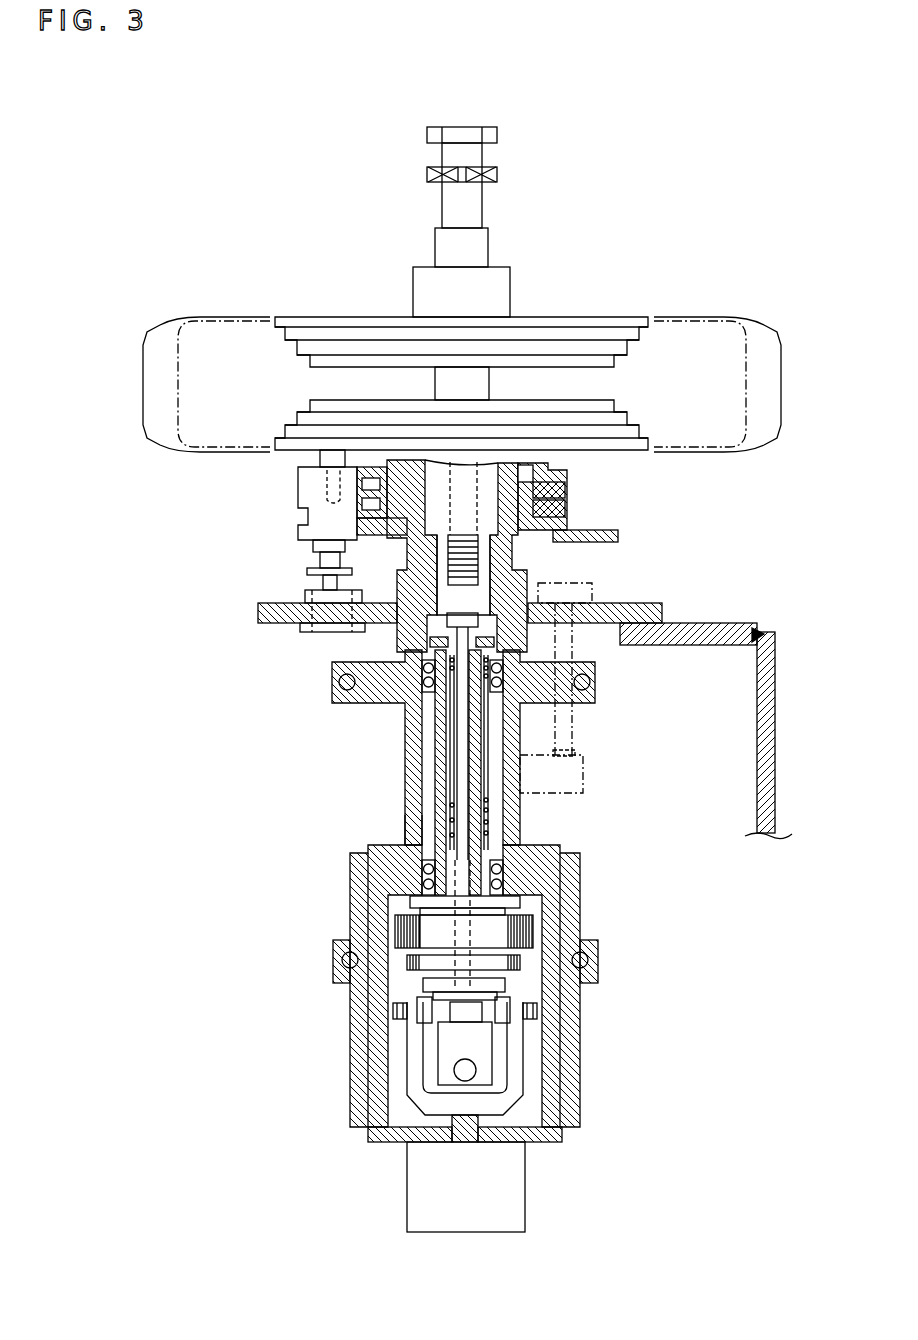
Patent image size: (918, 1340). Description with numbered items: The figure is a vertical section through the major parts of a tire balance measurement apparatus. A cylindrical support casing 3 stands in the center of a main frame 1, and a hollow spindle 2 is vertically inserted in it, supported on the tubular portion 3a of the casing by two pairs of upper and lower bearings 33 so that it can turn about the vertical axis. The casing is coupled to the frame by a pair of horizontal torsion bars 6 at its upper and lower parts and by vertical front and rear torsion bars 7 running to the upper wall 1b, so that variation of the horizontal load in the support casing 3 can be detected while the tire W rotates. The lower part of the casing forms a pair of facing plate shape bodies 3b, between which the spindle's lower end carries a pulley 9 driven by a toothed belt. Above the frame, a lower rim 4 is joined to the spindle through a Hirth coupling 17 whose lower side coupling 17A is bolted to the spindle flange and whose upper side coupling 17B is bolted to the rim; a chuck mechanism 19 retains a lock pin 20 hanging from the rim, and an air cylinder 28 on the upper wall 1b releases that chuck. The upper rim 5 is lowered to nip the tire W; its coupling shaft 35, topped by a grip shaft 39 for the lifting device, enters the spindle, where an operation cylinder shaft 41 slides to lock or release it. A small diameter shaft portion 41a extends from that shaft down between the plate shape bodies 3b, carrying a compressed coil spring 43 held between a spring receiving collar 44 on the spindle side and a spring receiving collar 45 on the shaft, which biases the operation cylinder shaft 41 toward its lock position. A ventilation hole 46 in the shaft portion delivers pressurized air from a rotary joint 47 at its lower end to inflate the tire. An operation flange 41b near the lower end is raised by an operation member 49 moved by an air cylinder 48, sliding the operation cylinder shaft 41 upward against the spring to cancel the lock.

The grip shaft 39 is at (480, 207).
The tire W is at (198, 313).
The upper rim 5 is at (338, 317).
The lower rim 4 is at (300, 415).
The chuck mechanism 19 is at (300, 508).
The lock pin 20 is at (327, 482).
The spindle 2 is at (527, 573).
The Hirth coupling 17 is at (613, 496).
The lower side coupling 17A is at (568, 508).
The upper side coupling 17B is at (568, 492).
The operation cylinder shaft 41 is at (427, 597).
The coupling shaft 35 is at (453, 592).
The air cylinder 28 is at (305, 598).
The upper wall 1b is at (640, 607).
The main frame 1 is at (776, 720).
The spring receiving collar 44 is at (435, 640).
The support casing 3 is at (403, 798).
The tubular portion 3a is at (408, 828).
The torsion bars 6 is at (332, 682).
The bearings 33 is at (420, 682).
The small diameter shaft portion 41a is at (447, 773).
The ventilation hole 46 is at (462, 745).
The compressed coil spring 43 is at (488, 810).
The spring receiving collar 45 is at (483, 829).
The torsion bars 7 is at (575, 752).
The plate shape bodies 3b is at (352, 872).
The pulley 9 is at (398, 925).
The operation flange 41b is at (505, 982).
The operation member 49 is at (405, 1073).
The rotary joint 47 is at (490, 1051).
The air cylinder 48 is at (527, 1197).